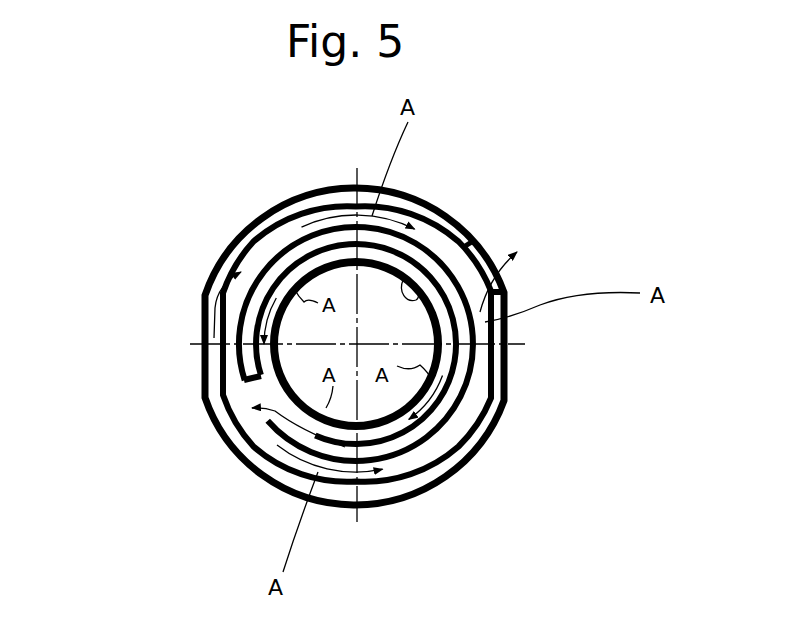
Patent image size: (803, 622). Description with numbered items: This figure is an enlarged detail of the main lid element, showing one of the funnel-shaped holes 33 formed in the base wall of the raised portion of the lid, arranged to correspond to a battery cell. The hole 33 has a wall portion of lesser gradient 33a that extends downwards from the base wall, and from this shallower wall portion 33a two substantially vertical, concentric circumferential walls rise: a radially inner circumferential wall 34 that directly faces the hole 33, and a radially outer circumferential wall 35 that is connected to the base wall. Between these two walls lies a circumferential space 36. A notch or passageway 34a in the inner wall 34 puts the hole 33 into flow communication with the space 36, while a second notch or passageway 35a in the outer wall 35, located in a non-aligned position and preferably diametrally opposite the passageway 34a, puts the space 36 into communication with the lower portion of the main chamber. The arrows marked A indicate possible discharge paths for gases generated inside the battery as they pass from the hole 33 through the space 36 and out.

The hole 33 is at (407, 273).
The wall portion of lesser gradient 33a is at (297, 283).
The radially inner circumferential wall 34 is at (428, 445).
The notch or passageway 34a is at (247, 383).
The radially outer circumferential wall 35 is at (500, 428).
The notch or passageway 35a is at (470, 243).
The circumferential space 36 is at (470, 407).